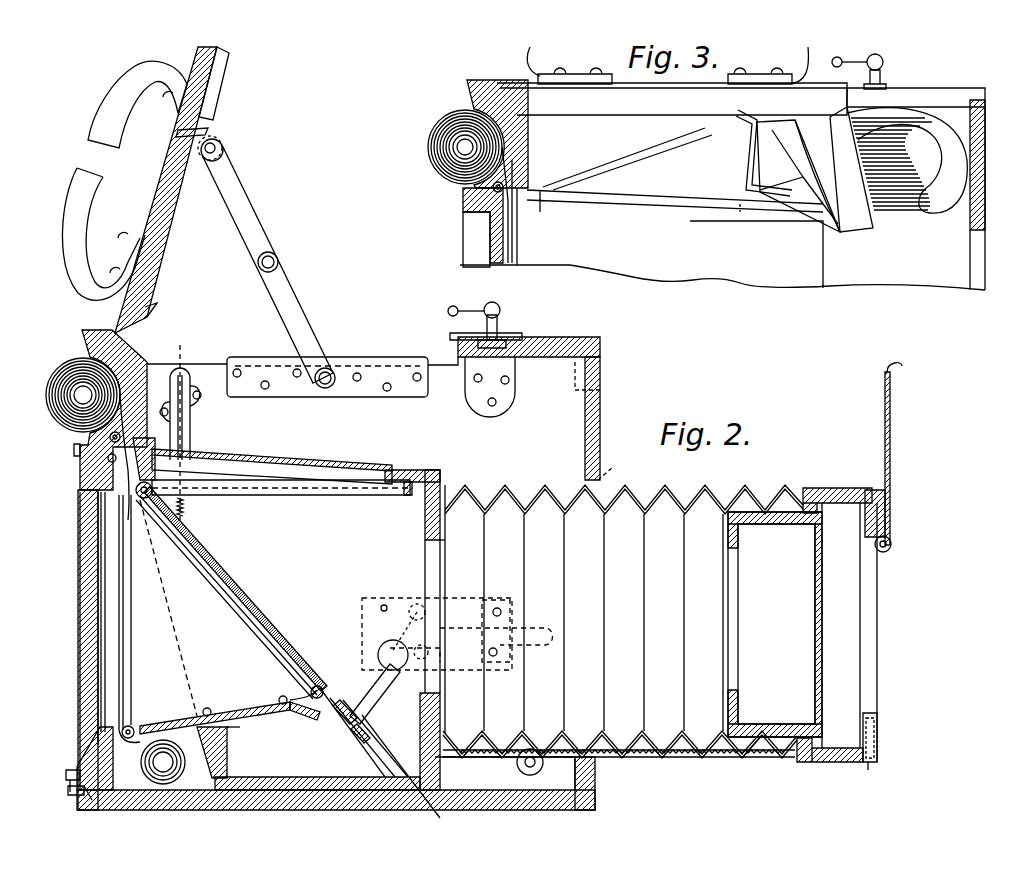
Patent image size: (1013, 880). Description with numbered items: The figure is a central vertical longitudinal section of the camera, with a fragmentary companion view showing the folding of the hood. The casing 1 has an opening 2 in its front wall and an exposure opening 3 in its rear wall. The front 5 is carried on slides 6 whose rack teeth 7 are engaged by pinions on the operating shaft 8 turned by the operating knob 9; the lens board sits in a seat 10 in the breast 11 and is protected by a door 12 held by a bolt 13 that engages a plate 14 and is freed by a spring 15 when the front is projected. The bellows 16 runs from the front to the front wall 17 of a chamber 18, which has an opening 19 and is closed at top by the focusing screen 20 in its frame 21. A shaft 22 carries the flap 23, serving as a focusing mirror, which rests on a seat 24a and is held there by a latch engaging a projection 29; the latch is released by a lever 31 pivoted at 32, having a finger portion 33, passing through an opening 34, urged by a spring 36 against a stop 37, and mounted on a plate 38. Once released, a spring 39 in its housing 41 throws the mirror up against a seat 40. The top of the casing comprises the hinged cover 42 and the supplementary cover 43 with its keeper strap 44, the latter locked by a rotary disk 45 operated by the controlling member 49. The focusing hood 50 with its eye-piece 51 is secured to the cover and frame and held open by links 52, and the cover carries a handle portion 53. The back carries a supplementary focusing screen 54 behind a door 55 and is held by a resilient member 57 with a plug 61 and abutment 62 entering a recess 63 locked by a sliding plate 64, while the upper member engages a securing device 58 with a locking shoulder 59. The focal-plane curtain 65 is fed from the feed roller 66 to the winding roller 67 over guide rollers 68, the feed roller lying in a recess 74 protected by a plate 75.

In FIG. 2, the casing 1 is at (82, 546).
In FIG. 2, the opening 2 is at (609, 470).
In FIG. 2, the exposure opening 3 is at (107, 578).
In FIG. 2, the front 5 is at (870, 490).
In FIG. 2, the slides 6 is at (726, 744).
In FIG. 2, the rack teeth 7 is at (744, 756).
In FIG. 2, the operating shaft 8 is at (520, 766).
In FIG. 2, the operating knob 9 is at (440, 352).
In FIG. 2, the seat 10 is at (740, 700).
In FIG. 2, the breast 11 is at (764, 524).
In FIG. 2, the door 12 is at (891, 470).
In FIG. 2, the bolt 13 is at (878, 722).
In FIG. 2, the plate 14 is at (600, 755).
In FIG. 2, the spring 15 is at (878, 742).
In FIG. 2, the bellows 16 is at (683, 752).
In FIG. 2, the front wall 17 is at (424, 512).
In FIG. 2, the chamber 18 is at (266, 642).
In FIG. 2, the opening 19 is at (425, 548).
In FIG. 2, the focusing screen 20 is at (270, 452).
In FIG. 2, the frame 21 is at (396, 466).
In FIG. 2, the shaft 22 is at (168, 528).
In FIG. 2, the flap 23 is at (262, 634).
In FIG. 2, the seat 24a is at (322, 708).
In FIG. 2, the projection 29 is at (305, 696).
In FIG. 2, the lever 31 is at (360, 694).
In FIG. 2, the pivot 32 is at (414, 616).
In FIG. 2, the finger portion 33 is at (538, 626).
In FIG. 2, the opening 34 is at (378, 650).
In FIG. 2, the spring 36 is at (455, 672).
In FIG. 2, the stop 37 is at (496, 600).
In FIG. 2, the plate 38 is at (397, 628).
In FIG. 2, the spring 39 is at (186, 508).
In FIG. 2, the seat 40 is at (296, 496).
In FIG. 2, the housing 41 is at (194, 430).
In FIG. 2, the hinged cover 42 is at (163, 205).
In FIG. 3, the hinged cover 42 is at (672, 81).
In FIG. 2, the supplementary cover 43 is at (580, 330).
In FIG. 3, the supplementary cover 43 is at (722, 189).
In FIG. 2, the keeper strap 44 is at (455, 334).
In FIG. 2, the rotary disk 45 is at (506, 340).
In FIG. 2, the controlling member 49 is at (500, 307).
In FIG. 3, the controlling member 49 is at (884, 62).
In FIG. 3, the focusing hood 50 is at (691, 171).
In FIG. 3, the eye-piece 51 is at (898, 169).
In FIG. 2, the links 52 is at (288, 300).
In FIG. 2, the handle portion 53 is at (124, 180).
In FIG. 2, the supplementary focusing screen 54 is at (96, 628).
In FIG. 2, the door 55 is at (88, 666).
In FIG. 2, the resilient member 57 is at (66, 775).
In FIG. 2, the securing device 58 is at (74, 450).
In FIG. 2, the locking shoulder 59 is at (85, 466).
In FIG. 2, the plug 61 is at (68, 792).
In FIG. 2, the abutment 62 is at (100, 798).
In FIG. 2, the recess 63 is at (82, 768).
In FIG. 2, the sliding plate 64 is at (90, 800).
In FIG. 2, the curtain 65 is at (125, 620).
In FIG. 2, the feed roller 66 is at (78, 385).
In FIG. 3, the feed roller 66 is at (455, 132).
In FIG. 2, the winding roller 67 is at (163, 776).
In FIG. 2, the guide rollers 68 is at (131, 726).
In FIG. 2, the recess 74 is at (108, 436).
In FIG. 3, the recess 74 is at (462, 196).
In FIG. 2, the plate 75 is at (46, 394).
In FIG. 3, the plate 75 is at (428, 146).